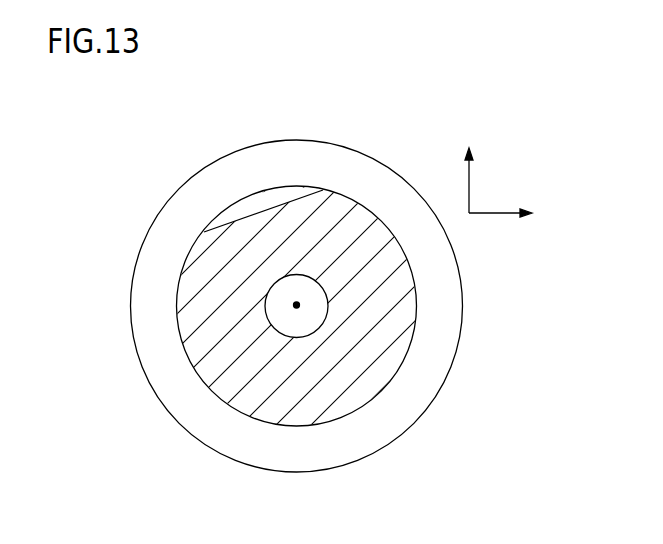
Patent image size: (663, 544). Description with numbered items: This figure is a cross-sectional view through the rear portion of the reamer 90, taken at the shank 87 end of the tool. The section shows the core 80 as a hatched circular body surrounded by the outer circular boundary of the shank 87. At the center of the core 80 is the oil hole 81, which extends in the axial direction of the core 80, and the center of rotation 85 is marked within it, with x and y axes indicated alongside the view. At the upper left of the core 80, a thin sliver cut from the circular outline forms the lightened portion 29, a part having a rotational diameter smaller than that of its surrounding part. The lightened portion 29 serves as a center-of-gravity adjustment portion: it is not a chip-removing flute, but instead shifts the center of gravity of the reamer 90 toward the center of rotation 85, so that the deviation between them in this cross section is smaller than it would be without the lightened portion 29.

The reamer 90 is at (461, 124).
The shank 87 is at (385, 162).
The core 80 is at (310, 403).
The lightened portion 29 is at (258, 212).
The oil hole 81 is at (328, 303).
The center of rotation 85 is at (296, 307).